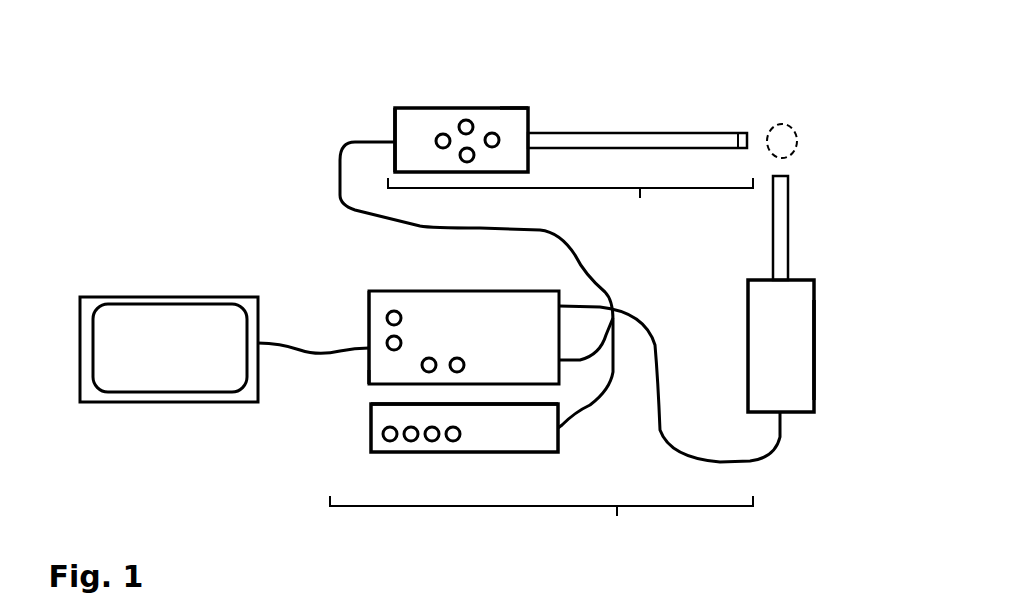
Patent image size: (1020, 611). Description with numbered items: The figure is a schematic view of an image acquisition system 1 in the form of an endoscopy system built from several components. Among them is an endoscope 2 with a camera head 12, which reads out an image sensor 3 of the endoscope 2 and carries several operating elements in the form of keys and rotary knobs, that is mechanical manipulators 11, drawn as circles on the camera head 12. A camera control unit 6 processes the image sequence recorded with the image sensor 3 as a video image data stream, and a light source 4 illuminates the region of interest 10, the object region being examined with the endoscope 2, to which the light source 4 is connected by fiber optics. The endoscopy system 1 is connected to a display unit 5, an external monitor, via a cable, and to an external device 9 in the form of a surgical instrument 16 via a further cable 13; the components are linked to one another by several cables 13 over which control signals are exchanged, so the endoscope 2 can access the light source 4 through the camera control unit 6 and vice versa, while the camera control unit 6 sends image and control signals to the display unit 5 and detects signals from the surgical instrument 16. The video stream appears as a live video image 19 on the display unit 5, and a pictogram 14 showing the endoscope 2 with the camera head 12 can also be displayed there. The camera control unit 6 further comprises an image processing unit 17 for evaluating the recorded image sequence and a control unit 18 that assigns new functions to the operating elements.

The image acquisition system 1 is at (541, 521).
The endoscope 2 is at (570, 208).
The image sensor 3 is at (740, 132).
The light source 4 is at (371, 428).
The display unit 5 is at (236, 300).
The camera control unit 6 is at (385, 305).
The external device 9 is at (793, 327).
The region of interest 10 is at (785, 132).
The mechanical manipulators 11 is at (512, 108).
The camera head 12 is at (410, 122).
The cables 13 is at (350, 141).
The pictogram 14 is at (115, 358).
The surgical instrument 16 is at (787, 378).
The image processing unit 17 is at (519, 312).
The control unit 18 is at (380, 368).
The live video image 19 is at (189, 345).